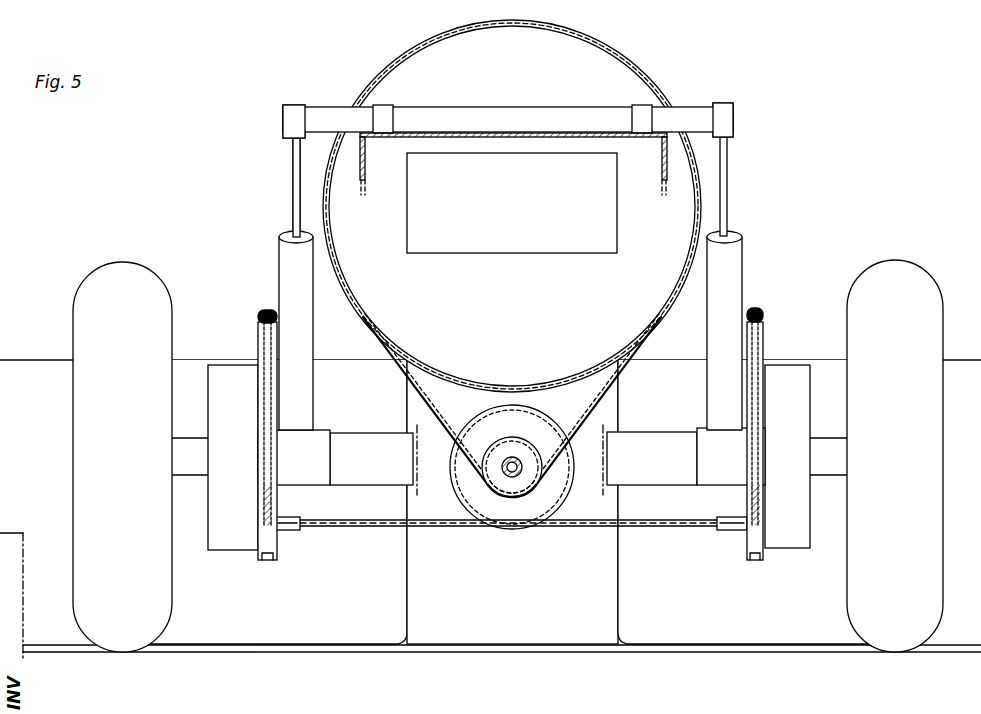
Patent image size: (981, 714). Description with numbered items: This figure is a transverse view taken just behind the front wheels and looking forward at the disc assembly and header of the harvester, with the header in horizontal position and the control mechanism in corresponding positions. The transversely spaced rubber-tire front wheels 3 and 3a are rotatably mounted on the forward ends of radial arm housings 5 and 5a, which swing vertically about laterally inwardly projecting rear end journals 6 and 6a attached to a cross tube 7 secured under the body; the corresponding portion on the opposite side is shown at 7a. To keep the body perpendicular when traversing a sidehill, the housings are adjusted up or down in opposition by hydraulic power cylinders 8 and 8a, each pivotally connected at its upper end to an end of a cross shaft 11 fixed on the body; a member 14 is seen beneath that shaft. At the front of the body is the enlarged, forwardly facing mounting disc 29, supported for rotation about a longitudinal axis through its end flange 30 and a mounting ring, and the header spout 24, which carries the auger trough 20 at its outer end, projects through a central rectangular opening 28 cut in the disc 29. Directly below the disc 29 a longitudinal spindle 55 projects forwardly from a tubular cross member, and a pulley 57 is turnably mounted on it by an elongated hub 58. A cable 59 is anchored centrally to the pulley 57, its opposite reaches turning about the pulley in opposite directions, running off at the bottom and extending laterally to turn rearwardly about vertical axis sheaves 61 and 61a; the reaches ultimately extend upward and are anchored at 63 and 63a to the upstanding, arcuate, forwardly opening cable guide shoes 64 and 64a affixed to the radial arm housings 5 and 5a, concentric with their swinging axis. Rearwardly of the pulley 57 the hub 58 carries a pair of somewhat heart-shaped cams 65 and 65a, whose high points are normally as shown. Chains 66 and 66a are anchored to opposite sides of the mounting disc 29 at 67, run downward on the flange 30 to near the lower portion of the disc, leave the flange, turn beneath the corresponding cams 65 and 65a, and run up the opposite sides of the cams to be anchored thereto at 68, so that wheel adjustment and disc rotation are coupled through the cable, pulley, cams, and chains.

The front wheel 3 is at (150, 598).
The front wheel 3a is at (928, 437).
The radial arm housing 5 is at (228, 528).
The radial arm housing 5a is at (782, 538).
The rear end journal 6 is at (307, 440).
The rear end journal 6a is at (708, 473).
The cross tube 7 is at (372, 458).
The shaft housing 7a is at (650, 460).
The hydraulic power cylinder 8 is at (290, 278).
The hydraulic power cylinder 8a is at (742, 248).
The cross shaft 11 is at (516, 120).
The mounting plate 14 is at (548, 140).
The auger trough 20 is at (297, 633).
The header spout 24 is at (608, 591).
The rectangular opening 28 is at (474, 257).
The mounting disc 29 is at (614, 86).
The end flange 30 is at (617, 52).
The spindle 55 is at (518, 462).
The pulley 57 is at (543, 503).
The hub 58 is at (508, 478).
The cable 59 is at (652, 527).
The vertical axis sheave 61 is at (293, 533).
The vertical axis sheave 61a is at (723, 530).
The cable anchor 63 is at (262, 315).
The cable anchor 63a is at (757, 310).
The cable guide shoe 64 is at (262, 345).
The cable guide shoe 64a is at (757, 345).
The heart-shaped cam 65 is at (485, 500).
The heart-shaped cam 65a is at (510, 450).
The chain 66 is at (403, 380).
The chain 66a is at (622, 387).
The chain anchor 67 is at (325, 148).
The chain anchor 68 is at (490, 448).